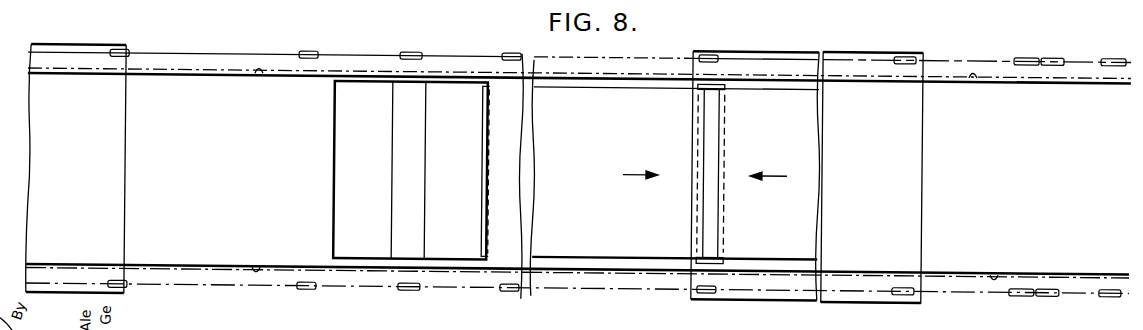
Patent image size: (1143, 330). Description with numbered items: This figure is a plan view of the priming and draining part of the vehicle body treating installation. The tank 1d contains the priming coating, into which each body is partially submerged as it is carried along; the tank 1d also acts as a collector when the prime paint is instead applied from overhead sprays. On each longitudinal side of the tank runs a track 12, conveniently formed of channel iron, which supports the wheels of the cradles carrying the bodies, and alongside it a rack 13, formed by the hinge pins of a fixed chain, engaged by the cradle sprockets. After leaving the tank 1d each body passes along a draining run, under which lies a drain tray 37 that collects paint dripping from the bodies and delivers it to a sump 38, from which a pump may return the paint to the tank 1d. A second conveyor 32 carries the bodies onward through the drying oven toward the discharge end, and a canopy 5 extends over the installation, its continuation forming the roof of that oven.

The canopy 5 is at (838, 45).
The track 12 is at (208, 76).
The rack 13 is at (262, 72).
The second conveyor 32 is at (358, 52).
The drain tray 37 is at (512, 175).
The sump 38 is at (712, 242).
The tank containing the priming coating 1d is at (454, 175).